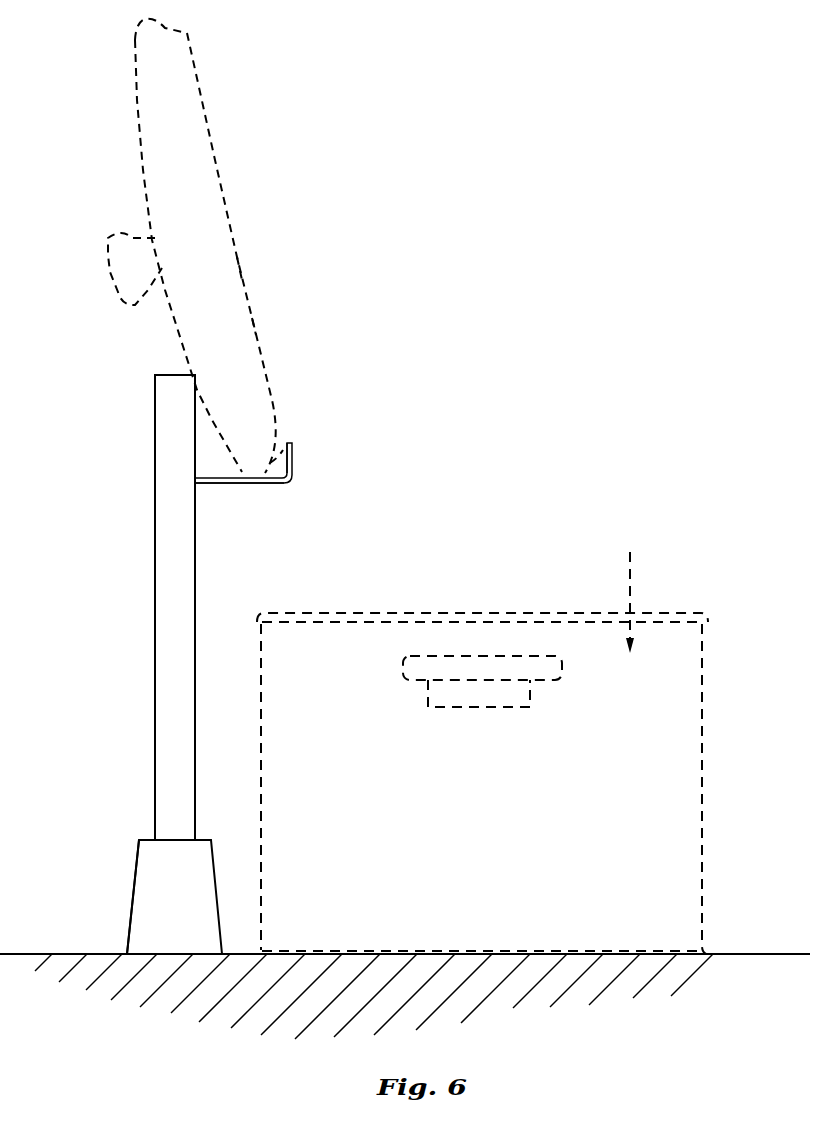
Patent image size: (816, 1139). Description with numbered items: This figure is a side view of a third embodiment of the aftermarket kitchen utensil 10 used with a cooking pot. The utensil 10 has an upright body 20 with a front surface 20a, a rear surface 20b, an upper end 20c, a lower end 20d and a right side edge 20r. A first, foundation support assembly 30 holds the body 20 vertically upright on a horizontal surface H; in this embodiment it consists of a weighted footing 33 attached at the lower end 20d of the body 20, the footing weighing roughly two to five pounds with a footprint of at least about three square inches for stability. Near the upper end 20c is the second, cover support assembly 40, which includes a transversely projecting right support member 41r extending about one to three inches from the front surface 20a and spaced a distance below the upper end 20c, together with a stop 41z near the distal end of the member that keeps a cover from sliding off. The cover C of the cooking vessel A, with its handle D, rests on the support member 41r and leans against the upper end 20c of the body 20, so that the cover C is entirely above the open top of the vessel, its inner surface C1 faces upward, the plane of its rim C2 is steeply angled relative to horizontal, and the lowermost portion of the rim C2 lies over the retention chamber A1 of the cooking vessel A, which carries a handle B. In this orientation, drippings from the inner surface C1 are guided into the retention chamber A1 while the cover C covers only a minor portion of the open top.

The utensil 10 is at (128, 575).
The body 20 is at (160, 447).
The front surface of body 20a is at (196, 557).
The rear surface of body 20b is at (155, 656).
The upper end of body 20c is at (167, 375).
The lower end of body 20d is at (170, 833).
The right side edge of body 20r is at (167, 745).
The foundation support assembly 30 is at (108, 917).
The weighted footing 33 is at (147, 884).
The cover support assembly 40 is at (300, 441).
The stop 41z is at (292, 471).
The right support member 41r is at (230, 483).
The cover of cooking vessel C is at (252, 410).
The inner surface of cover C1 is at (205, 265).
The rim of cover C2 is at (255, 323).
The handle on cover D is at (108, 272).
The cooking vessel A is at (657, 928).
The retention chamber of cooking vessel A1 is at (630, 552).
The handle on cooking vessel B is at (400, 673).
The horizontal surface H is at (599, 994).